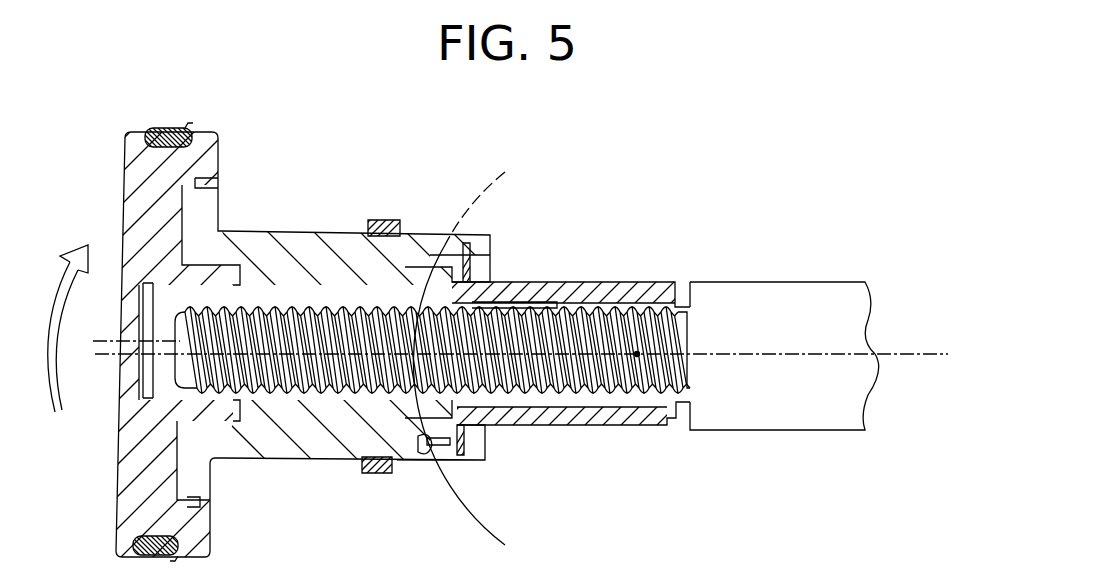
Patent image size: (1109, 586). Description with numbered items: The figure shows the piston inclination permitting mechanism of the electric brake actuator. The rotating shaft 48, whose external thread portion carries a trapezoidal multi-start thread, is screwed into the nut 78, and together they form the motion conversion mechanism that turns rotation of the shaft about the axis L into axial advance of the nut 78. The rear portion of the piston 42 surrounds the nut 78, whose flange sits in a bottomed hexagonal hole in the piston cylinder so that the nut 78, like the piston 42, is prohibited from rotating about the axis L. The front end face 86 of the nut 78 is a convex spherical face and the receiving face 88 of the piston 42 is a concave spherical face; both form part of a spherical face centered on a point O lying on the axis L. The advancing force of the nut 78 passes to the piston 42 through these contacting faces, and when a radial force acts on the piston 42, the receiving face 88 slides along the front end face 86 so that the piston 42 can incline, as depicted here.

The piston 42 is at (288, 203).
The nut 78 is at (566, 266).
The rotating shaft 48 is at (810, 267).
The front end face 86 is at (430, 443).
The receiving face 88 is at (418, 440).
The point O is at (640, 350).
The axis L is at (893, 354).